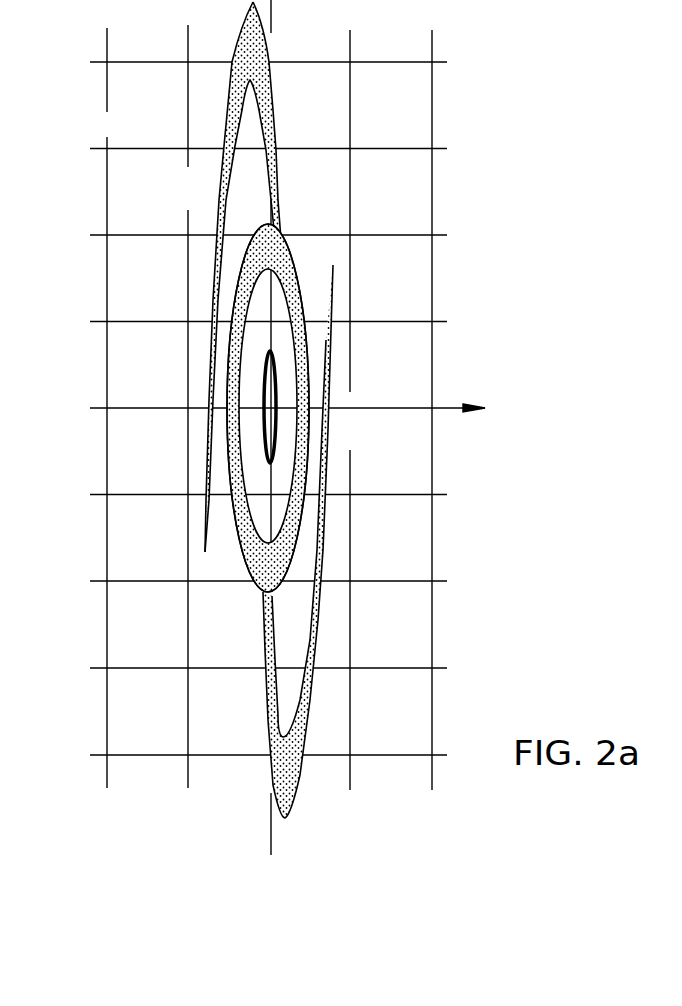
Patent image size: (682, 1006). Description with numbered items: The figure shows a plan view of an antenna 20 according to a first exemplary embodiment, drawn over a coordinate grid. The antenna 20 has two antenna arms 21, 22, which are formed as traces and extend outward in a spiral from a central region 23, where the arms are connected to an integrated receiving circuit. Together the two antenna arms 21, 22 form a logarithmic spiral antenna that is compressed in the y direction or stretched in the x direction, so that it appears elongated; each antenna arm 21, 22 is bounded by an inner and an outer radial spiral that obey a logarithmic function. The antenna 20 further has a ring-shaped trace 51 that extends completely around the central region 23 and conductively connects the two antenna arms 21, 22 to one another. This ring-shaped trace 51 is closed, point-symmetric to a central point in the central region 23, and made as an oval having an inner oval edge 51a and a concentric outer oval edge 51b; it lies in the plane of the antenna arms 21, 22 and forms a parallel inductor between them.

The antenna 20 is at (105, 126).
The antenna arm 21 is at (216, 193).
The antenna arm 22 is at (323, 635).
The central region 23 is at (280, 414).
The ring-shaped trace 51 is at (299, 256).
The inner oval edge 51a is at (285, 511).
The outer oval edge 51b is at (240, 557).